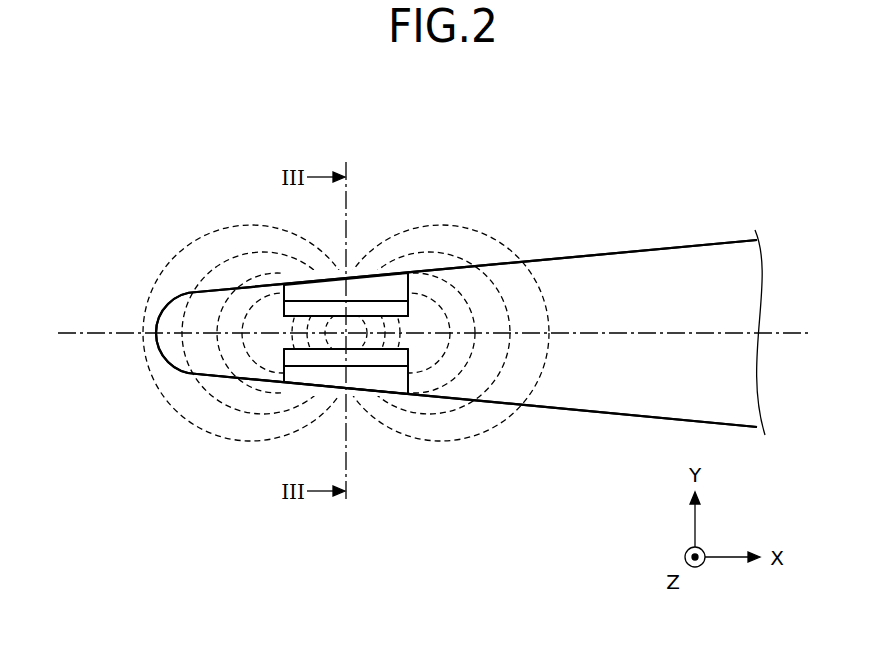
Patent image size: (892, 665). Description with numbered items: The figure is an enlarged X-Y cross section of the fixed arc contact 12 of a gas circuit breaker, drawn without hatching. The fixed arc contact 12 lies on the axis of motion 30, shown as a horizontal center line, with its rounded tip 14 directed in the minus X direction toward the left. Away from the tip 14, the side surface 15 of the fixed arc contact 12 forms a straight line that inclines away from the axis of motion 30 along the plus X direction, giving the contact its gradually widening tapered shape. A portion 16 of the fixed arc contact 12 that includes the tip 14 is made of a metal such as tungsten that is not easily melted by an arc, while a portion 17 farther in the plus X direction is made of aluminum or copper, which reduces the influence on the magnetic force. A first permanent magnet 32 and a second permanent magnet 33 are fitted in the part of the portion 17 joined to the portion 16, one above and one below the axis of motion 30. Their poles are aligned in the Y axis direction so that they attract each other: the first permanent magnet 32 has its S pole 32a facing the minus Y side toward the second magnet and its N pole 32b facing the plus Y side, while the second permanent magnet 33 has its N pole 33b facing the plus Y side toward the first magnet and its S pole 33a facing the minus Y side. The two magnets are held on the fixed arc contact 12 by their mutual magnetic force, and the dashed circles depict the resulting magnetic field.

The fixed arc contact 12 is at (699, 242).
The tip 14 is at (156, 333).
The side surface 15 is at (613, 413).
The portion 16 is at (208, 365).
The portion 17 is at (633, 273).
The axis of motion 30 is at (95, 335).
The first permanent magnet 32 is at (392, 202).
The S pole 32a is at (397, 311).
The N pole 32b is at (392, 290).
The second permanent magnet 33 is at (392, 465).
The S pole 33a is at (392, 390).
The N pole 33b is at (395, 357).